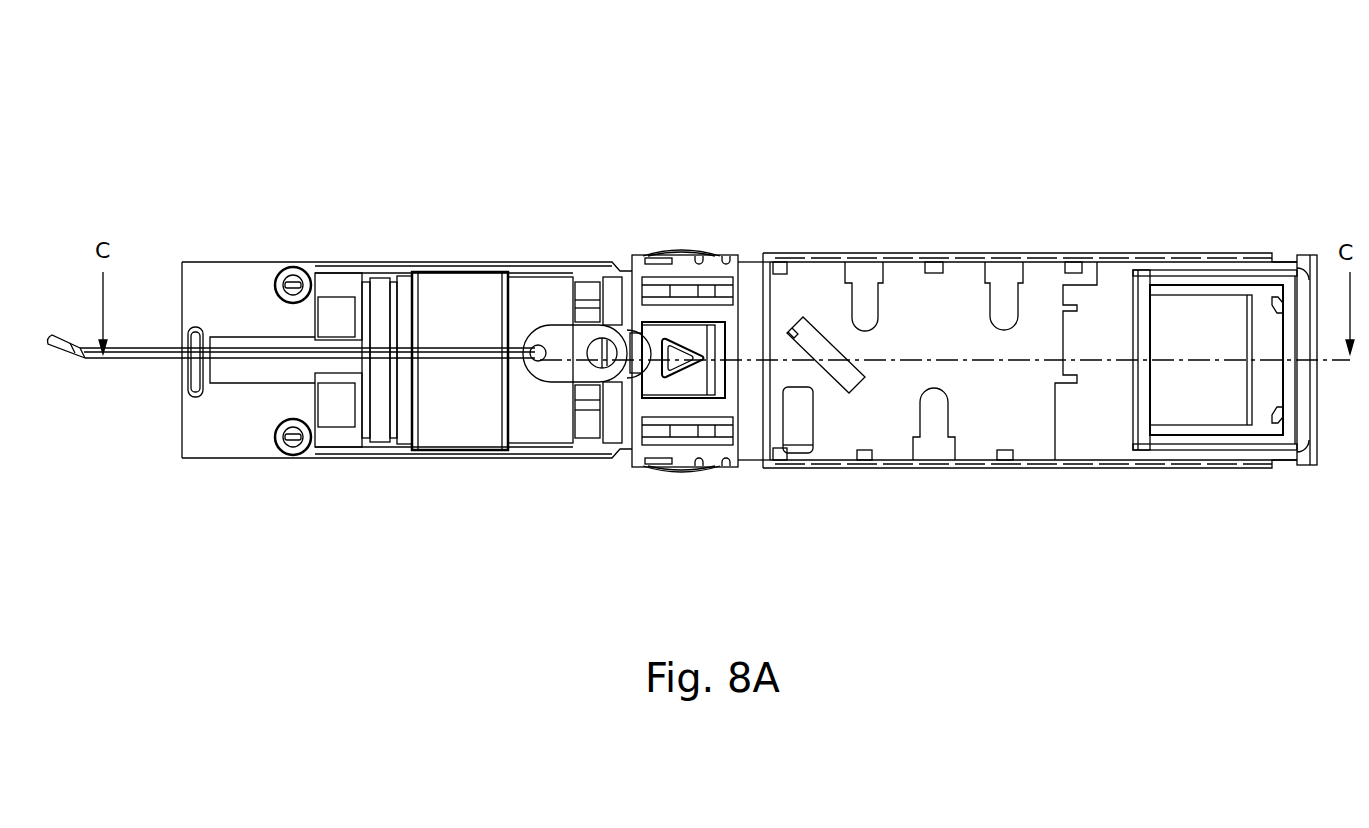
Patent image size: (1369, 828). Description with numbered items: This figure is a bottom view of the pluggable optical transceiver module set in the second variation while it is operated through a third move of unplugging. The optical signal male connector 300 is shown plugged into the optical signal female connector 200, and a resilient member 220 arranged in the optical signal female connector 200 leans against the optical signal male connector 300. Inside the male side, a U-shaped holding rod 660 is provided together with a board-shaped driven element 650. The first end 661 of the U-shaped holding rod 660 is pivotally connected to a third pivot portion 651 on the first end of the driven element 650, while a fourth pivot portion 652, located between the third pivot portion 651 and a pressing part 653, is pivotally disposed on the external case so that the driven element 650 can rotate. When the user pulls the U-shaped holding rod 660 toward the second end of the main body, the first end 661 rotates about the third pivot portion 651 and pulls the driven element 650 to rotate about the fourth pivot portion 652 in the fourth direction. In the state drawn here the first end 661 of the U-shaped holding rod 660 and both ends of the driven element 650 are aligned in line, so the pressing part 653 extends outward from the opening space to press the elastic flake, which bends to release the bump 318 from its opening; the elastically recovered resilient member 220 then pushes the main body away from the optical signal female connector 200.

The optical signal male connector 300 is at (437, 186).
The optical signal female connector 200 is at (1103, 186).
The resilient member 220 is at (1273, 298).
The third pivot portion 651 is at (540, 344).
The fourth pivot portion 652 is at (603, 338).
The pressing part 653 is at (643, 343).
The U-shaped holding rod 660 is at (244, 376).
The first end of the U-shaped holding rod 661 is at (473, 358).
The driven element 650 is at (563, 388).
The bump 318 is at (671, 384).